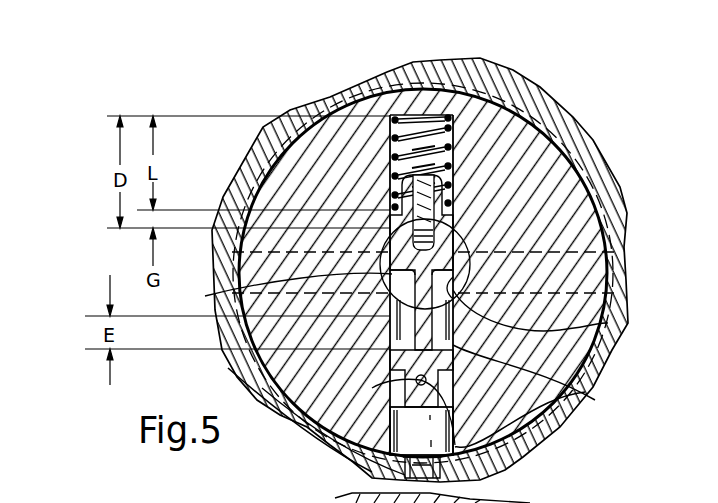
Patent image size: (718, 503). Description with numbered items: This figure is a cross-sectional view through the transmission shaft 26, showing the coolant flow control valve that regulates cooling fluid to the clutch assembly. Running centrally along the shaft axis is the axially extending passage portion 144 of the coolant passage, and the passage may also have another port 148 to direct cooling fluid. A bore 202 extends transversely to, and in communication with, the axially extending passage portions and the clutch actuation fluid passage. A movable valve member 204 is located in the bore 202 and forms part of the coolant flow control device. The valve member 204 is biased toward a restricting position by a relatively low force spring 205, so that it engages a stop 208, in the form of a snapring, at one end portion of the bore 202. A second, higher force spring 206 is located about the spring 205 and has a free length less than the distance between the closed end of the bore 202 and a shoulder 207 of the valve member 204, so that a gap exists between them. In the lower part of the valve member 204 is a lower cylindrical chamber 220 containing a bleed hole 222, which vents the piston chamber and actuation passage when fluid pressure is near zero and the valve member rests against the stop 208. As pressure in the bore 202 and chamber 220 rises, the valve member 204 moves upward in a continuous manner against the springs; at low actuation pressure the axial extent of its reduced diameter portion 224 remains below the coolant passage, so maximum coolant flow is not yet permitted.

The shaft 26 is at (511, 169).
The axially extending passage portion 144 is at (605, 325).
The port 148 is at (566, 252).
The bore 202 is at (585, 392).
The valve member 204 is at (530, 437).
The spring 205 is at (419, 128).
The second spring 206 is at (470, 92).
The shoulder 207 is at (453, 215).
The stop 208 is at (470, 440).
The lower cylindrical chamber 220 is at (392, 382).
The bleed hole 222 is at (421, 384).
The reduced diameter portion 224 is at (309, 340).